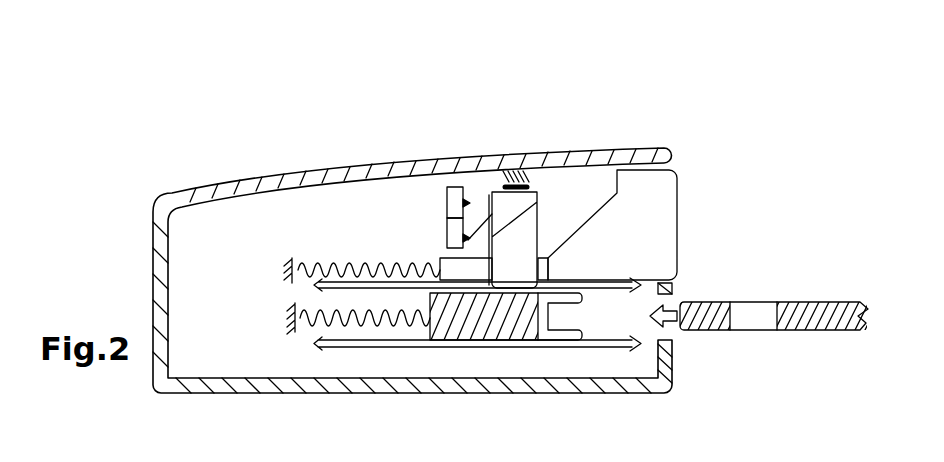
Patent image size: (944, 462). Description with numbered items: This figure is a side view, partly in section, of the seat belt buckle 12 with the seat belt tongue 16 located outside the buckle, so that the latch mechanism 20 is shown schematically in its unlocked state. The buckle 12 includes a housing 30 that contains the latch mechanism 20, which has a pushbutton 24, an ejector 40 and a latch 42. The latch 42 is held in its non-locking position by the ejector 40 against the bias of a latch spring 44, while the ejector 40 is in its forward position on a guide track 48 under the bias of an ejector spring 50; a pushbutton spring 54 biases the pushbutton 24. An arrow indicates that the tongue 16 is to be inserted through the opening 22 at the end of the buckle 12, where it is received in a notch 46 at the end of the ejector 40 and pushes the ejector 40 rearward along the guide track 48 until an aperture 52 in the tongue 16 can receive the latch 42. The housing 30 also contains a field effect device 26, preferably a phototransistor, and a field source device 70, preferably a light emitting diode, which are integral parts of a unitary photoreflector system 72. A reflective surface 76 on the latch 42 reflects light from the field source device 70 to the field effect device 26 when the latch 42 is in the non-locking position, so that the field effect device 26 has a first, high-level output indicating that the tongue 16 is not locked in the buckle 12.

The seat belt buckle 12 is at (366, 255).
The seat belt tongue 16 is at (773, 330).
The latch mechanism 20 is at (415, 323).
The opening 22 is at (680, 292).
The pushbutton 24 is at (680, 222).
The field effect device 26 is at (421, 183).
The housing 30 is at (324, 176).
The ejector 40 is at (455, 325).
The latch 42 is at (498, 181).
The latch spring 44 is at (500, 183).
The notch 46 is at (590, 320).
The guide track 48 is at (378, 347).
The ejector spring 50 is at (304, 312).
The aperture 52 is at (755, 321).
The pushbutton spring 54 is at (308, 265).
The field source device 70 is at (447, 232).
The photoreflector system 72 is at (440, 209).
The reflective surface 76 is at (490, 215).